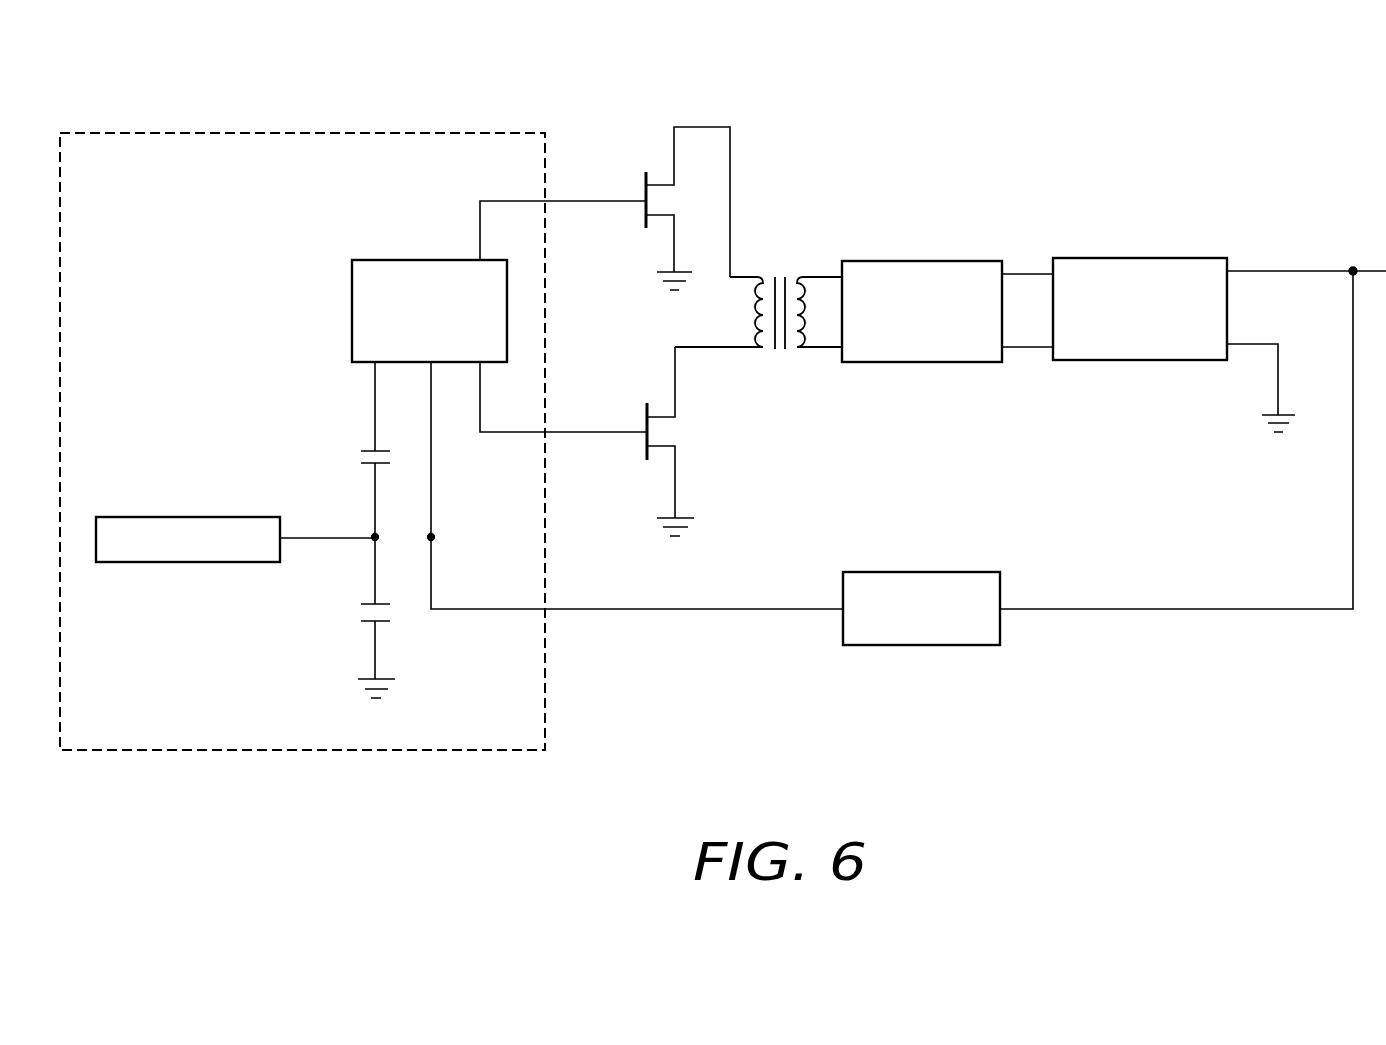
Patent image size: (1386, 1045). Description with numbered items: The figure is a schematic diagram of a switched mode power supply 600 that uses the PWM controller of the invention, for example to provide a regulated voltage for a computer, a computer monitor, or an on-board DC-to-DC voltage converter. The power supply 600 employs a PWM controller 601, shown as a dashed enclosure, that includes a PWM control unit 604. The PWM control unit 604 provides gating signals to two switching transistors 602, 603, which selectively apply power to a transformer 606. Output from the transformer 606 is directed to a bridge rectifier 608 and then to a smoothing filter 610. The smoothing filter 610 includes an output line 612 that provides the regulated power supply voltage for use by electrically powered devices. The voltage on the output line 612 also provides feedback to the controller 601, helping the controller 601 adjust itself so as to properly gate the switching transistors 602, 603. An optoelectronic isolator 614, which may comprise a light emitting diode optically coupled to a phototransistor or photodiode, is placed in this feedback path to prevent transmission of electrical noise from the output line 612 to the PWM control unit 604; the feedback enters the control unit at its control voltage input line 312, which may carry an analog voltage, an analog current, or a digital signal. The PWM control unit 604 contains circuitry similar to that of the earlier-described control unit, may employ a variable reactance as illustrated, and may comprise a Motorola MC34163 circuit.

The switched mode power supply 600 is at (1100, 731).
The PWM controller 601 is at (155, 133).
The switching transistor 602 is at (645, 182).
The switching transistor 603 is at (646, 414).
The PWM control unit 604 is at (444, 260).
The transformer 606 is at (779, 265).
The bridge rectifier 608 is at (910, 261).
The smoothing filter 610 is at (1132, 258).
The output line 612 is at (1299, 270).
The optoelectronic isolator 614 is at (932, 572).
The control voltage input line 312 is at (431, 537).